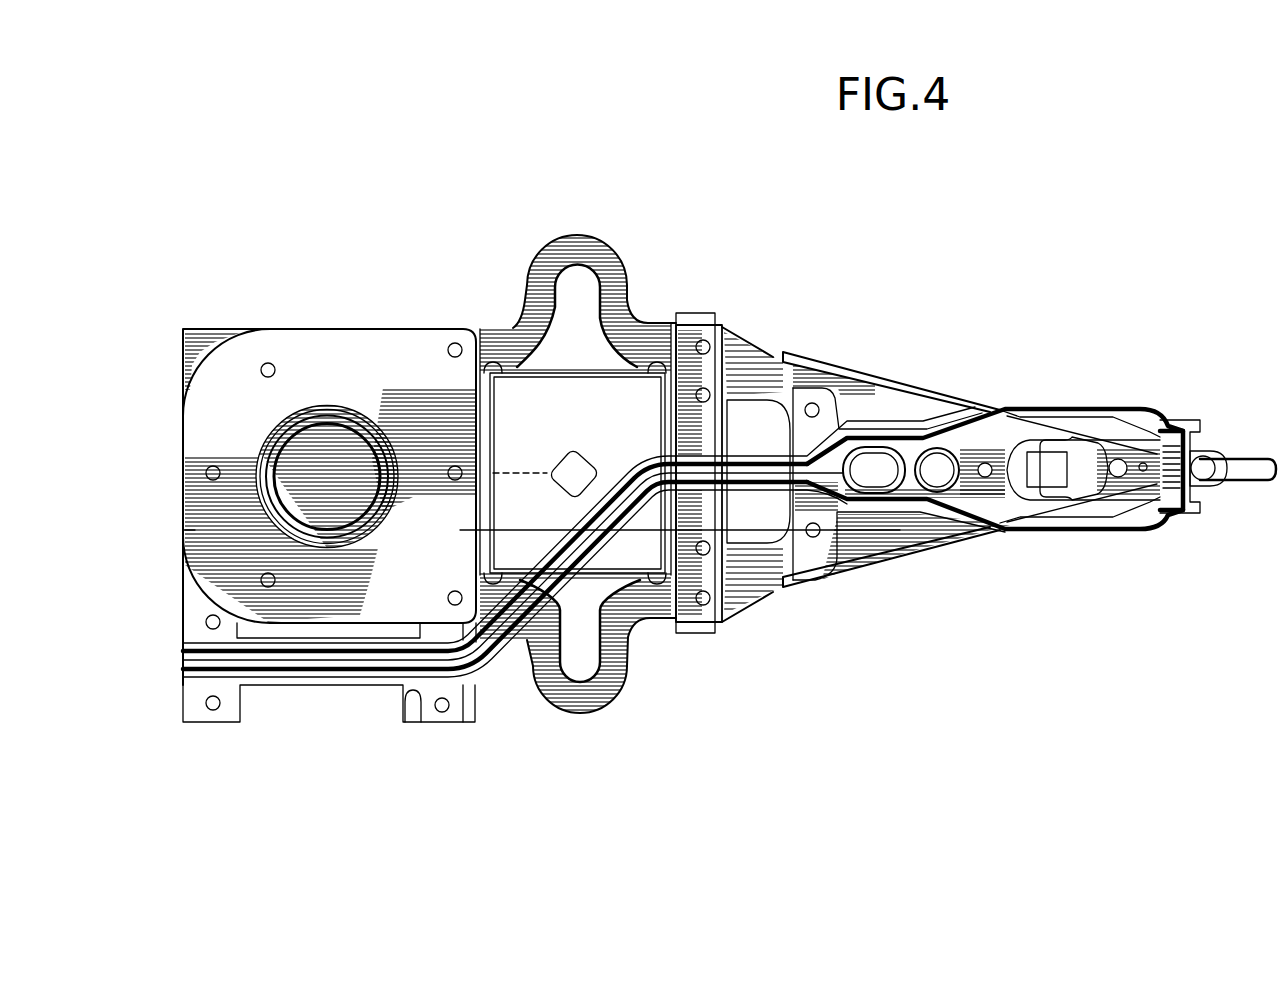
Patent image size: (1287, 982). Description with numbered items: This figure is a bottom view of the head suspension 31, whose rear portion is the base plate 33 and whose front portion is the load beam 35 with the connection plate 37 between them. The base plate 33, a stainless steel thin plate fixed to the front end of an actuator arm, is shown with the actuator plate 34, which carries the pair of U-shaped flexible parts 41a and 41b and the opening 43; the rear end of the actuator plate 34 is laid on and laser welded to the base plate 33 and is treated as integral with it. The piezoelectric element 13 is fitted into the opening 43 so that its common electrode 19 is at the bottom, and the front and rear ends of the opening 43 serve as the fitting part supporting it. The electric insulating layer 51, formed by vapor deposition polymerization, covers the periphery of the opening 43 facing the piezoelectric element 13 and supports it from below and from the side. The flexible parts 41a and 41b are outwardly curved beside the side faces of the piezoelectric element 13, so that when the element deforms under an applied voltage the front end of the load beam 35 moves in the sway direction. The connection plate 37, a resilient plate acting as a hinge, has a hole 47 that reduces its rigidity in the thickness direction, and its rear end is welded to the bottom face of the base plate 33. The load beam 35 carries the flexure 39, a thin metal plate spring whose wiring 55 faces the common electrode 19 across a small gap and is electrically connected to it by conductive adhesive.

The head suspension 31 is at (1017, 199).
The base plate 33 is at (318, 337).
The actuator plate 34 is at (509, 725).
The piezoelectric element 13 is at (618, 545).
The common electrode 19 is at (523, 400).
The wiring 55 is at (584, 420).
The flexible part 41a is at (577, 238).
The flexible part 41b is at (576, 698).
The opening 43 is at (601, 693).
The electric insulating layer 51 is at (481, 335).
The hole 47 is at (764, 504).
The connection plate 37 is at (763, 362).
The load beam 35 is at (940, 400).
The flexure 39 is at (1098, 532).